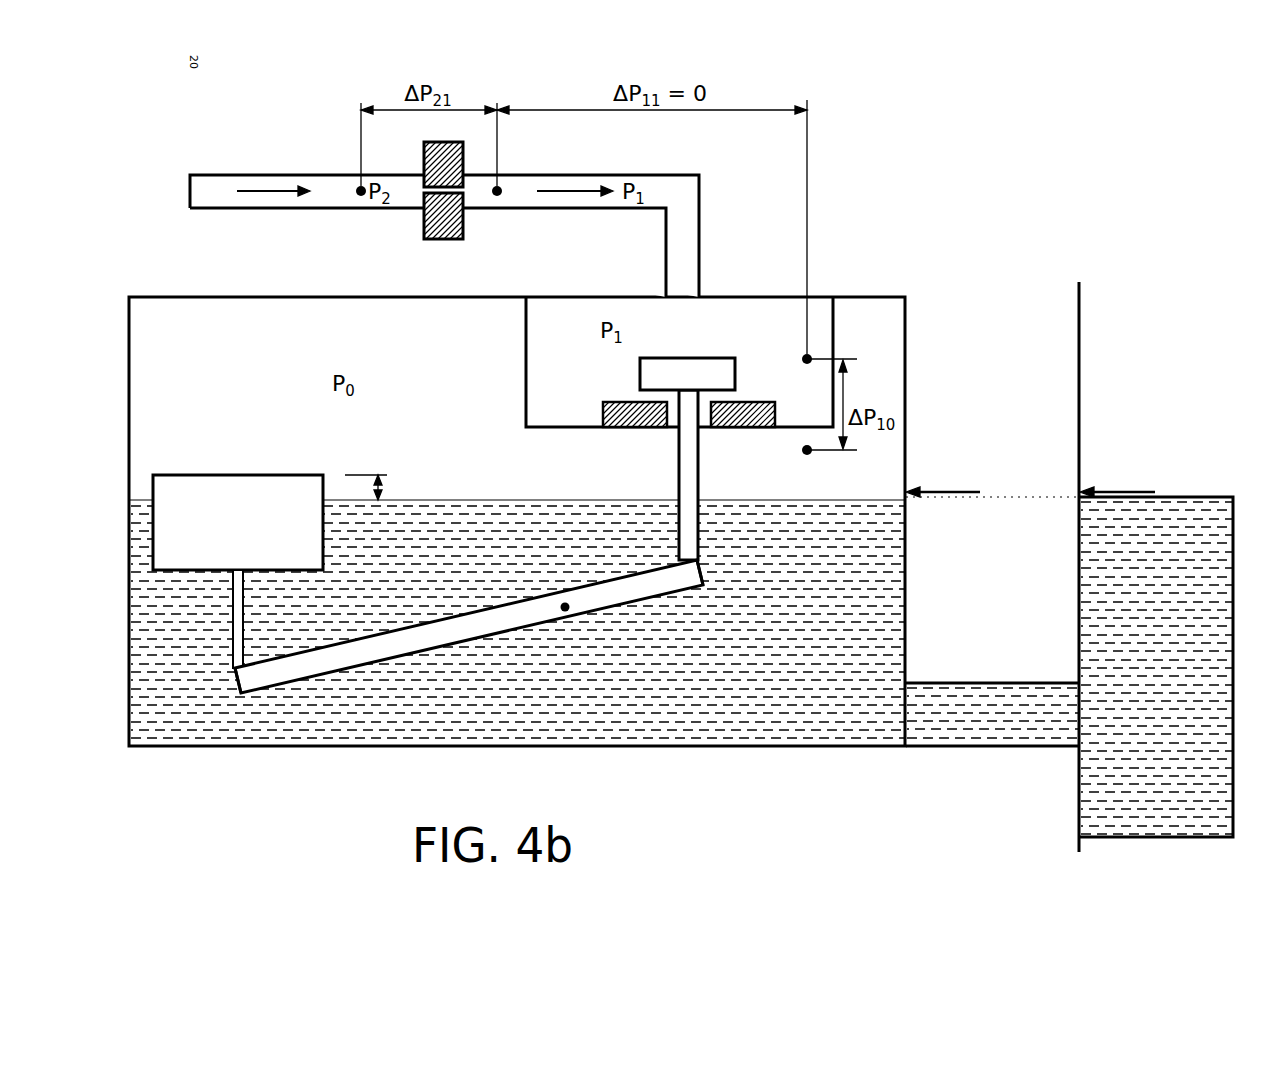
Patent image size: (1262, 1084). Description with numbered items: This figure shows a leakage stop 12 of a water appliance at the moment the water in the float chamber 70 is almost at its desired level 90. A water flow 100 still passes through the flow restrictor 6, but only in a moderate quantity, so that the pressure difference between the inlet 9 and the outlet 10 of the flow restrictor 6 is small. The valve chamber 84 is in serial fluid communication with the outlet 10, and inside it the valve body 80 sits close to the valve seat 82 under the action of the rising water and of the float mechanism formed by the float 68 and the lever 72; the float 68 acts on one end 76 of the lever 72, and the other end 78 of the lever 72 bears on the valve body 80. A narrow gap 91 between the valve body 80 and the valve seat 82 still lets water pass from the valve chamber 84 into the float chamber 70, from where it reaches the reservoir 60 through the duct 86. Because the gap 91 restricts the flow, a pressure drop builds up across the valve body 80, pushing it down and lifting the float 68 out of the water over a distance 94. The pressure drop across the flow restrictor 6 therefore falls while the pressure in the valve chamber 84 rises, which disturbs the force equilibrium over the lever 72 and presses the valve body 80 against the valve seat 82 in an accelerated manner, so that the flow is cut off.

The flow restrictor 6 is at (437, 240).
The inlet of flow restrictor 9 is at (361, 210).
The outlet of flow restrictor 10 is at (497, 210).
The leakage stop 12 is at (517, 471).
The reservoir 60 is at (1088, 352).
The float 68 is at (240, 475).
The float chamber 70 is at (177, 312).
The lever 72 is at (452, 620).
The end of lever 76 is at (247, 695).
The end of lever 78 is at (691, 574).
The valve body 80 is at (736, 378).
The valve seat 82 is at (741, 428).
The valve chamber 84 is at (533, 342).
The duct 86 is at (994, 735).
The desired level 90 is at (950, 490).
The gap 91 is at (650, 398).
The distance 94 is at (383, 477).
The water flow 100 is at (268, 188).